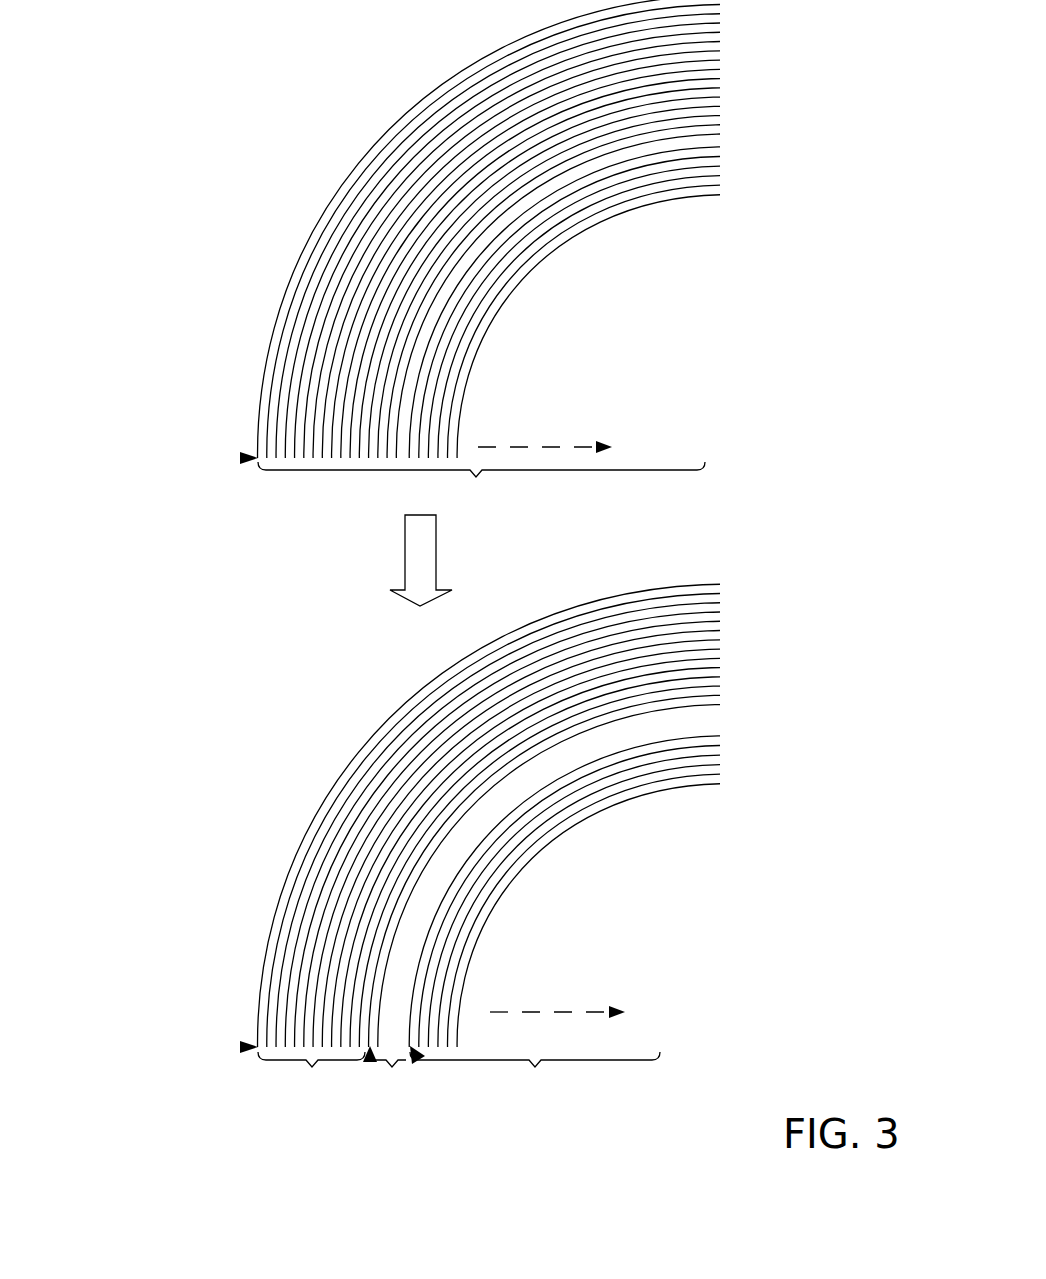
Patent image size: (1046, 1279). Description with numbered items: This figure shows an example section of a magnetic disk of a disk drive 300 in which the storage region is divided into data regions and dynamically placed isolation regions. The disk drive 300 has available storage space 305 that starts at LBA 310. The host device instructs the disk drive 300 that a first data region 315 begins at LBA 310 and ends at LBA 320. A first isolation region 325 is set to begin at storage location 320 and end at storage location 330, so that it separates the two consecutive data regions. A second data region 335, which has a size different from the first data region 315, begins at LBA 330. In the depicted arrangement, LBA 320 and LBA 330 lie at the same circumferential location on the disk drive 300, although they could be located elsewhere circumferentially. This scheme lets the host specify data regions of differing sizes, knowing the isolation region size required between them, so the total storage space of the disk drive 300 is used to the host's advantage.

The disk drive 300 is at (230, 80).
The available storage space 305 is at (345, 478).
The LBA 310 is at (245, 457).
The first data region 315 is at (262, 1062).
The LBA 320 is at (365, 1060).
The first isolation region 325 is at (440, 851).
The LBA 330 is at (418, 1056).
The second data region 335 is at (542, 1064).